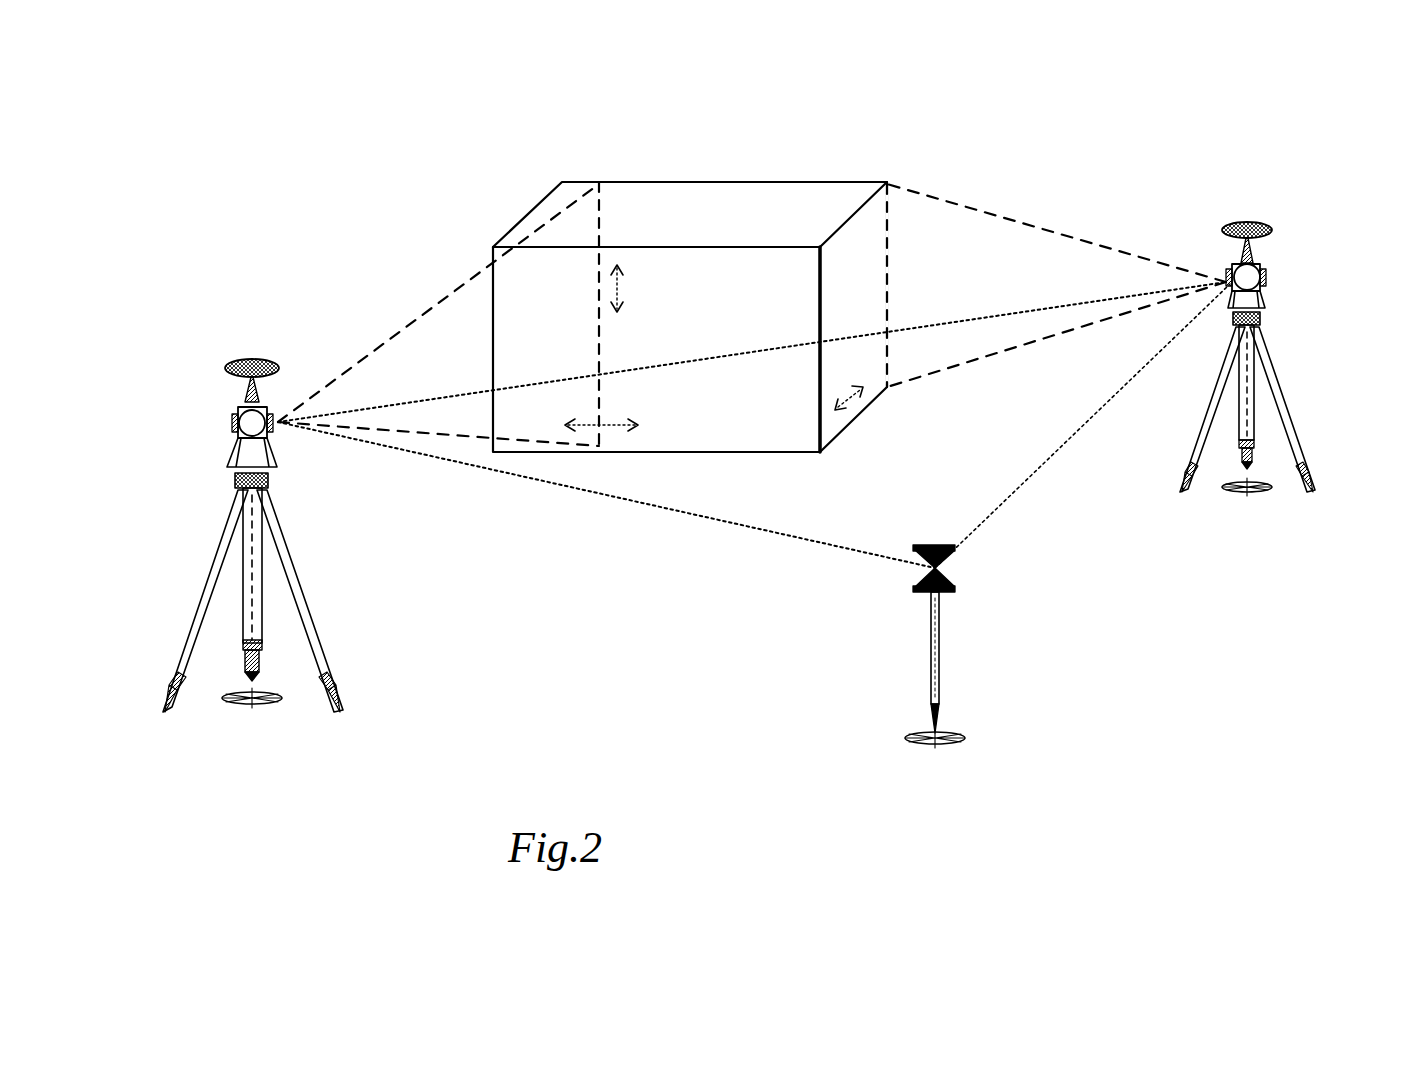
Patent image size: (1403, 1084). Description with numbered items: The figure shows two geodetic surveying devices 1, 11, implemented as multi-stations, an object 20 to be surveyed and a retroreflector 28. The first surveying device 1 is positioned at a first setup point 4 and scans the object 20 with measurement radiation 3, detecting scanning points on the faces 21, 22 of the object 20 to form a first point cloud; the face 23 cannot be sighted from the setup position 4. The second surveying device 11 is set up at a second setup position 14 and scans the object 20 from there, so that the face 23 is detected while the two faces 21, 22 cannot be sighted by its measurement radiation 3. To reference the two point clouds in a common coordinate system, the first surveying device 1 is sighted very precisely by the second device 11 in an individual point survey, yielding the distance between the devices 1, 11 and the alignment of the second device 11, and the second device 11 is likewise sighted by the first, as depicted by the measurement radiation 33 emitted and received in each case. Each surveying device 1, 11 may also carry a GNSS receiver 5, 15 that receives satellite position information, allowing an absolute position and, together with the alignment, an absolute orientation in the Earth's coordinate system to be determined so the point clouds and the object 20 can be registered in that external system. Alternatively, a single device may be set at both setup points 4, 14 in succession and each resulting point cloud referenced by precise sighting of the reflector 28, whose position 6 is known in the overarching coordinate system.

The first surveying device 1 is at (185, 391).
The measurement radiation 3 is at (410, 322).
The first setup point 4 is at (250, 703).
The GNSS receiver 5 is at (247, 363).
The position of the reflector 6 is at (932, 745).
The second surveying device 11 is at (1309, 229).
The second setup position 14 is at (1246, 491).
The GNSS receiver 15 is at (1245, 226).
The object 20 is at (614, 141).
The face 21 is at (806, 441).
The face 22 is at (764, 216).
The face 23 is at (825, 279).
The retroreflector 28 is at (940, 557).
The measurement radiation 33 is at (775, 533).